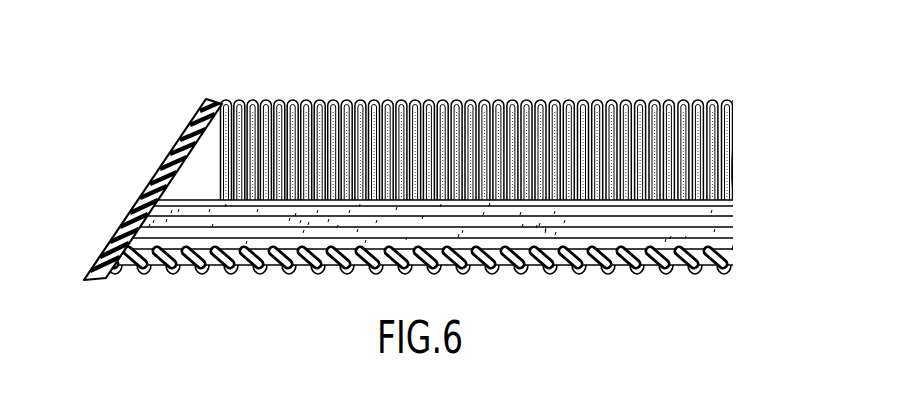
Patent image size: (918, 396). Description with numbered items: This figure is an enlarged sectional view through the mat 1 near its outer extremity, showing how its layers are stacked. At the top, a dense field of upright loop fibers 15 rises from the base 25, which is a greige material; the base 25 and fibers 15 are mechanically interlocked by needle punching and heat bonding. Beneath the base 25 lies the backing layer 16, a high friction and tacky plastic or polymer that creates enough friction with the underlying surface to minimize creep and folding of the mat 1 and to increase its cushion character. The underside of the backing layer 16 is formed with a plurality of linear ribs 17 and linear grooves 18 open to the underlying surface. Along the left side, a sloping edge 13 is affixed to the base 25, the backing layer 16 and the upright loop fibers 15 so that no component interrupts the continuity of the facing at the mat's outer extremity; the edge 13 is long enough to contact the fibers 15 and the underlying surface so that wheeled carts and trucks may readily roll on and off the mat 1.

The mat 1 is at (158, 131).
The edge 13 is at (137, 197).
The upright loop fibers 15 is at (667, 101).
The base 25 is at (723, 230).
The backing layer 16 is at (726, 252).
The linear ribs 17 is at (660, 275).
The linear grooves 18 is at (704, 270).